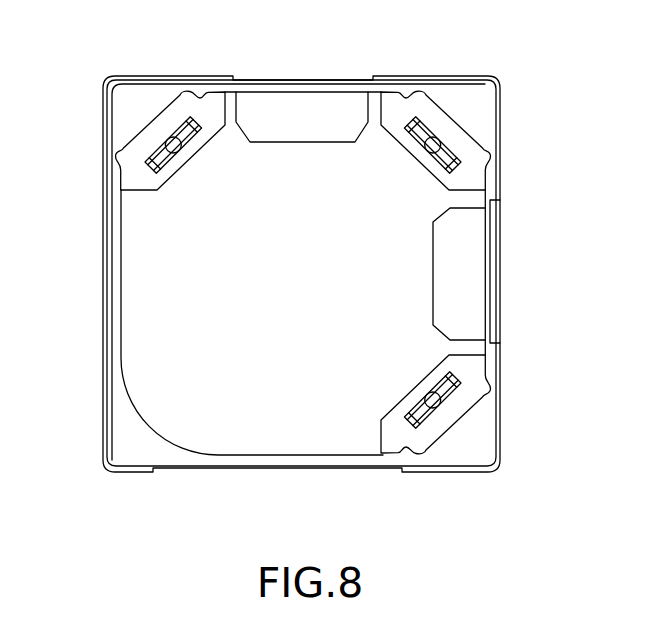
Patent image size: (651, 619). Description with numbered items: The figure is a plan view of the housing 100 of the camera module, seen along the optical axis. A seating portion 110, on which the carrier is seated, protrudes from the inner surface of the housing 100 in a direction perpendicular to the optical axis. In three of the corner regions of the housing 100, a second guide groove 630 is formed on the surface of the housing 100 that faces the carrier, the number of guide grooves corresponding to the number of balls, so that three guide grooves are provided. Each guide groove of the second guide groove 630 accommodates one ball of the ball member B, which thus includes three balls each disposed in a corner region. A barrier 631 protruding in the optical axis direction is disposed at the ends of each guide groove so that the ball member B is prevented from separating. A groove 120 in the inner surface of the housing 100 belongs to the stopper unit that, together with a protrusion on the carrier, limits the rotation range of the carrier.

The housing 100 is at (137, 436).
The seating portion 110 is at (134, 180).
The groove 120 is at (467, 115).
The second guide groove 630 is at (180, 138).
The barrier 631 is at (412, 98).
The ball member B is at (166, 139).